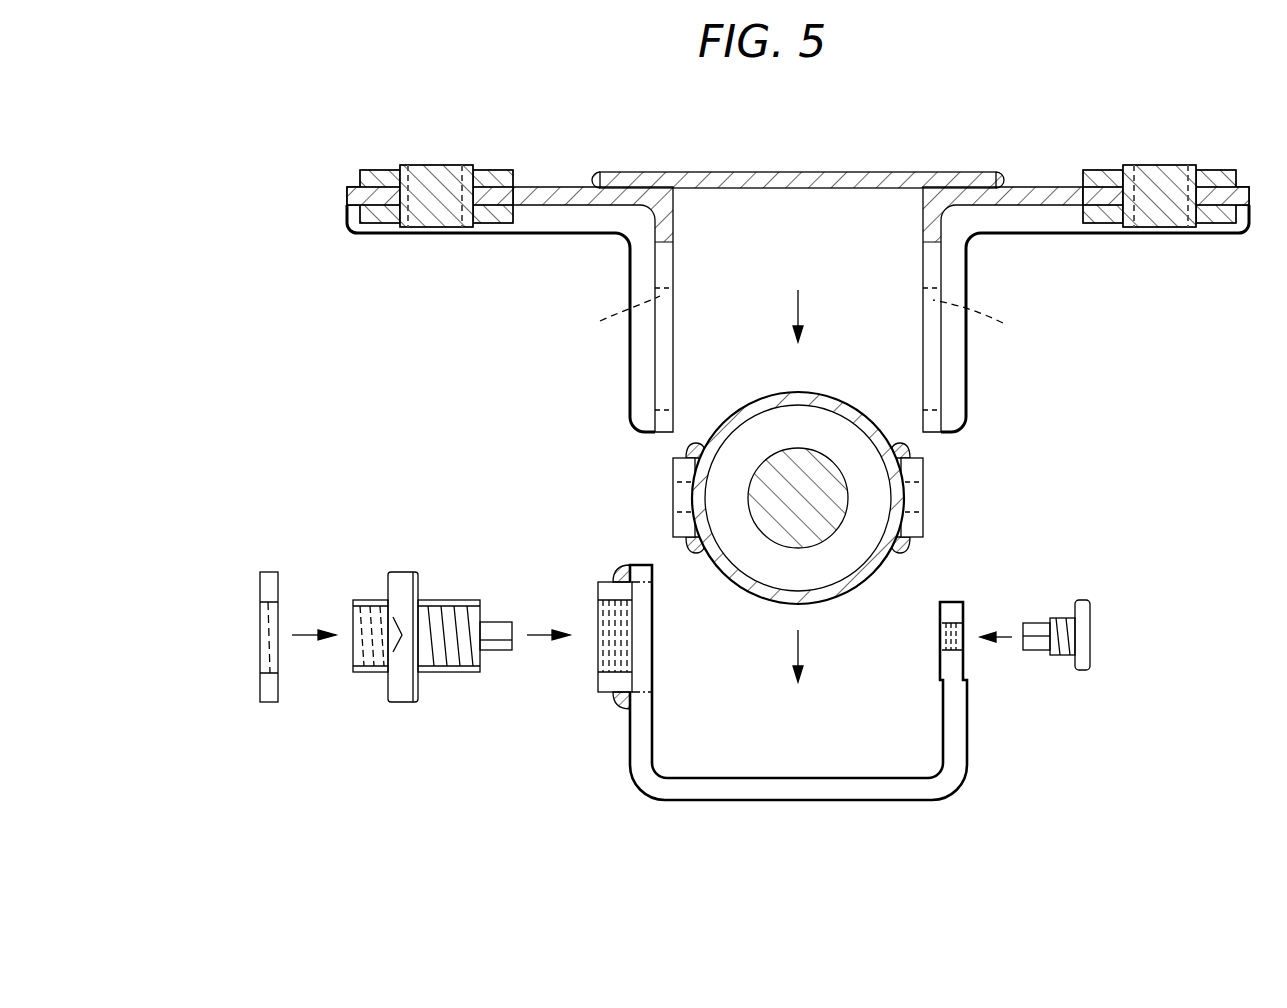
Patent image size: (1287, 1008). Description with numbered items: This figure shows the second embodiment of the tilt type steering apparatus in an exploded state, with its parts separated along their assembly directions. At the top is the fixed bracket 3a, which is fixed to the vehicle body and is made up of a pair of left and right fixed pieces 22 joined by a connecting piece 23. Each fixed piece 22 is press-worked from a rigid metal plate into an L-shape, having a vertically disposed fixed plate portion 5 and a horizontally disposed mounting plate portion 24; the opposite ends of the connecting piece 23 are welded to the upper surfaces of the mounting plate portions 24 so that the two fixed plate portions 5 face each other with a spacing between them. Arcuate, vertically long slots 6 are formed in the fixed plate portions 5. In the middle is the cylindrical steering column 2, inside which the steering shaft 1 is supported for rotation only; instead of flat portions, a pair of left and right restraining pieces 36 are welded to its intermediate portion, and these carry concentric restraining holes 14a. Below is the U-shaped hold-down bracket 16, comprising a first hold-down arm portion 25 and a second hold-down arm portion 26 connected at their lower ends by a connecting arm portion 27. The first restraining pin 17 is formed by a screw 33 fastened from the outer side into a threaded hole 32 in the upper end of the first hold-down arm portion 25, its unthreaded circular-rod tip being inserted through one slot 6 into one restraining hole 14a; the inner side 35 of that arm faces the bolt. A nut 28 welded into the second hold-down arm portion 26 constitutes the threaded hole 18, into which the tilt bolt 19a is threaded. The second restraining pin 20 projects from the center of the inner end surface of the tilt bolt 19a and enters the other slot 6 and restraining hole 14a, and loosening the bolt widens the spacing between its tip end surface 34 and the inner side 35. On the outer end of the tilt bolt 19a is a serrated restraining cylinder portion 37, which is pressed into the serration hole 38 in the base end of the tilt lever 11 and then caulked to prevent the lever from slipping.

The steering shaft 1 is at (762, 518).
The steering column 2 is at (832, 403).
The fixed bracket 3a is at (690, 165).
The fixed plate portion 5 is at (660, 262).
The slot 6 is at (800, 318).
The tilt lever 11 is at (272, 702).
The restraining hole 14a is at (677, 492).
The hold-down bracket 16 is at (872, 790).
The first restraining pin 17 is at (1037, 640).
The threaded hole 18 is at (615, 660).
The tilt bolt 19a is at (402, 580).
The second restraining pin 20 is at (498, 647).
The fixed piece 22 is at (380, 193).
The connecting piece 23 is at (800, 181).
The mounting plate portion 24 is at (537, 190).
The first hold-down arm portion 25 is at (953, 715).
The second hold-down arm portion 26 is at (642, 722).
The connecting arm portion 27 is at (786, 790).
The nut 28 is at (600, 578).
The threaded hole 32 is at (942, 647).
The screw 33 is at (1083, 637).
The tip end surface 34 is at (488, 608).
The inner side 35 is at (945, 602).
The restraining piece 36 is at (680, 525).
The restraining cylinder portion 37 is at (363, 673).
The serration hole 38 is at (268, 608).